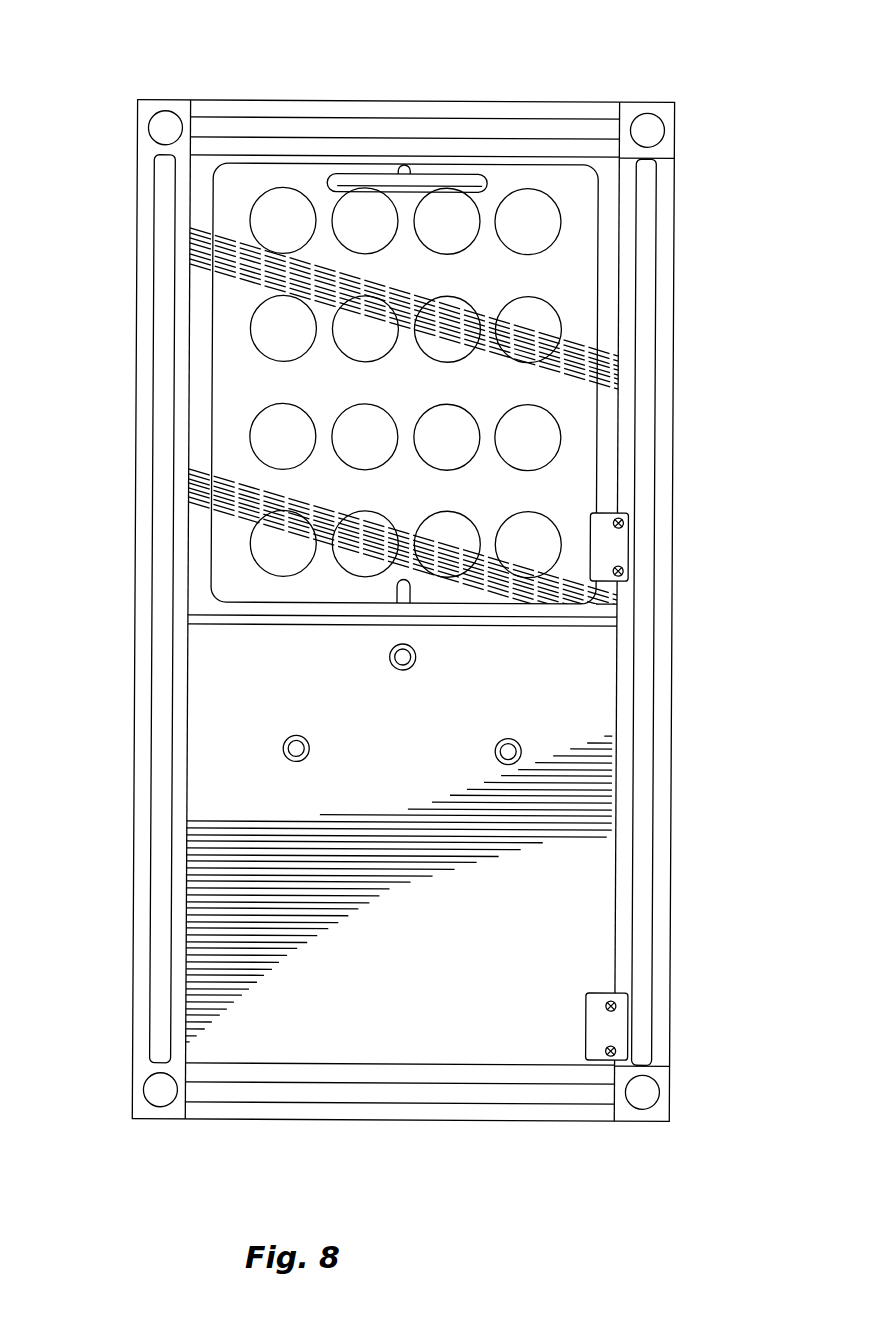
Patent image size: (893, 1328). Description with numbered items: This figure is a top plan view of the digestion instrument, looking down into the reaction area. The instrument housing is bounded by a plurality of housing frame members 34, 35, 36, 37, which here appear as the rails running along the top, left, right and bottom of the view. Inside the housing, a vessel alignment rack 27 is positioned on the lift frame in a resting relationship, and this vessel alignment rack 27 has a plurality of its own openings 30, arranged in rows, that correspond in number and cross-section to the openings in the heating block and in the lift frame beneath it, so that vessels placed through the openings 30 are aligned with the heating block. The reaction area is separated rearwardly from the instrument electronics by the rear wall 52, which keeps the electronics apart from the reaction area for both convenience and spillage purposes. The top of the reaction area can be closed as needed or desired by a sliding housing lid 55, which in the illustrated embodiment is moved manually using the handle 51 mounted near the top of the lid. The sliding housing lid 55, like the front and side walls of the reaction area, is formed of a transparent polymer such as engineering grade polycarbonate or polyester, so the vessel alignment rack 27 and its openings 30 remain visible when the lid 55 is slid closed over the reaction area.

The vessel alignment rack 27 is at (562, 505).
The openings 30 is at (360, 425).
The housing frame member 34 is at (564, 122).
The housing frame member 35 is at (152, 212).
The housing frame member 36 is at (645, 222).
The housing frame member 37 is at (447, 1093).
The handle 51 is at (362, 184).
The rear wall 52 is at (580, 608).
The sliding housing lid 55 is at (577, 358).